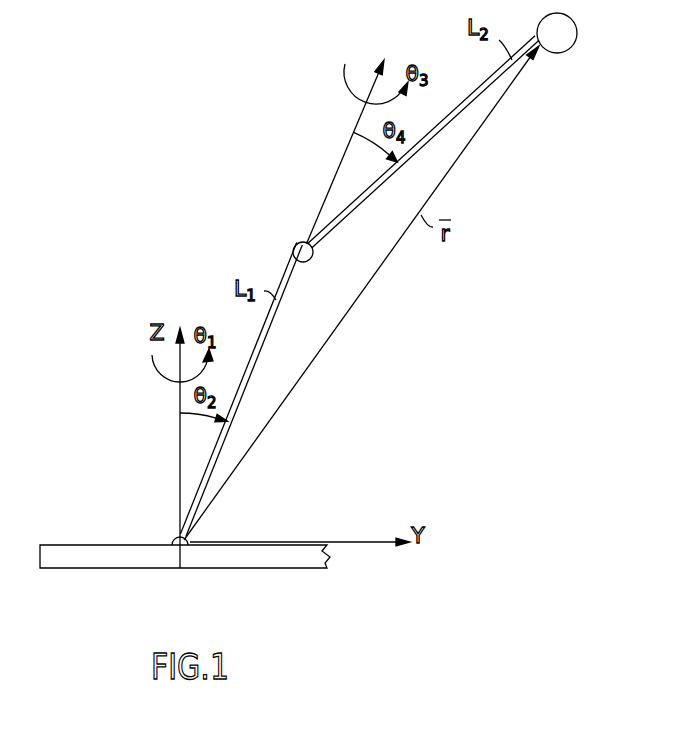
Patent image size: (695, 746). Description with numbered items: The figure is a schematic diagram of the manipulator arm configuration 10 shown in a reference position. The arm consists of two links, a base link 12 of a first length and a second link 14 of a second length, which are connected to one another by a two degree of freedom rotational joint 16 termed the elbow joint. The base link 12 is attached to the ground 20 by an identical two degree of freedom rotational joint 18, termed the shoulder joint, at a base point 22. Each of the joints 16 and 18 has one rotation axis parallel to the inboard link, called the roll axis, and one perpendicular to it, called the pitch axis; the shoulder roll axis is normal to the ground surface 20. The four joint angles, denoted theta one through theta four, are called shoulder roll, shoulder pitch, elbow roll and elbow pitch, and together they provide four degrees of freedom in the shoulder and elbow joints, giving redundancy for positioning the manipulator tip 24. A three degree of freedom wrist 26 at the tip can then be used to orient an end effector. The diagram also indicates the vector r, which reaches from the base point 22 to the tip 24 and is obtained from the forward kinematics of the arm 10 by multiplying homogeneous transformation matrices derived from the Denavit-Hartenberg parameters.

The manipulator arm configuration 10 is at (318, 469).
The base link 12 is at (277, 321).
The second link 14 is at (433, 135).
The elbow joint 16 is at (298, 244).
The shoulder joint 18 is at (176, 538).
The ground 20 is at (226, 562).
The base point 22 is at (181, 548).
The manipulator tip 24 is at (537, 40).
The wrist 26 is at (580, 33).